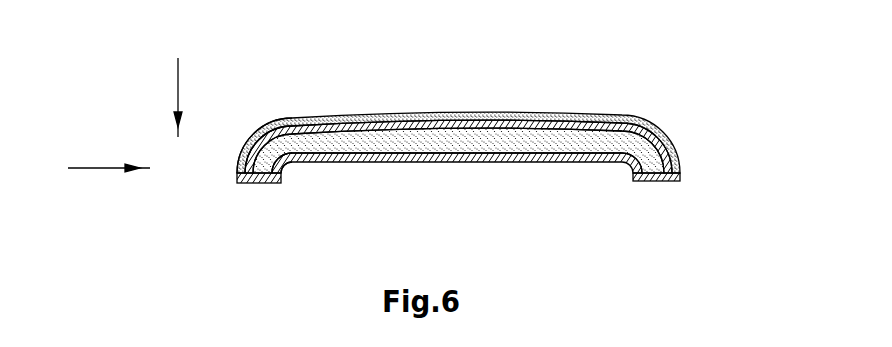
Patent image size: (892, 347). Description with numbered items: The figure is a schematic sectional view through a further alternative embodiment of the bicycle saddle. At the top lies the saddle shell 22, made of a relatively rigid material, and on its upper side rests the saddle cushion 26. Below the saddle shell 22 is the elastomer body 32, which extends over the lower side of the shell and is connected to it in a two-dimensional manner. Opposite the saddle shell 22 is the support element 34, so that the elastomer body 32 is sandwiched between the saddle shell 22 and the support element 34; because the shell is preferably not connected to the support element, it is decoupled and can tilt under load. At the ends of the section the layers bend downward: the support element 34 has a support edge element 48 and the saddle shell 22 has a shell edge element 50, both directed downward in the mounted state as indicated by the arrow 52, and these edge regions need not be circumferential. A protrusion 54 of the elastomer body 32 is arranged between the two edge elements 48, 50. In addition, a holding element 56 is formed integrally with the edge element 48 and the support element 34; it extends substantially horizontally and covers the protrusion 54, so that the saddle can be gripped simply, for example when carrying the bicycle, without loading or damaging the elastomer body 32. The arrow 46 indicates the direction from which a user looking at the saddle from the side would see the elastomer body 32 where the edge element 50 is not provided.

The saddle shell 22 is at (380, 113).
The saddle cushion 26 is at (322, 117).
The elastomer body 32 is at (453, 132).
The support element 34 is at (432, 158).
The arrow 46 is at (82, 168).
The support edge element 48 is at (282, 165).
The shell edge element 50 is at (237, 161).
The arrow 52 is at (178, 88).
The protrusion 54 is at (270, 128).
The holding element 56 is at (252, 175).